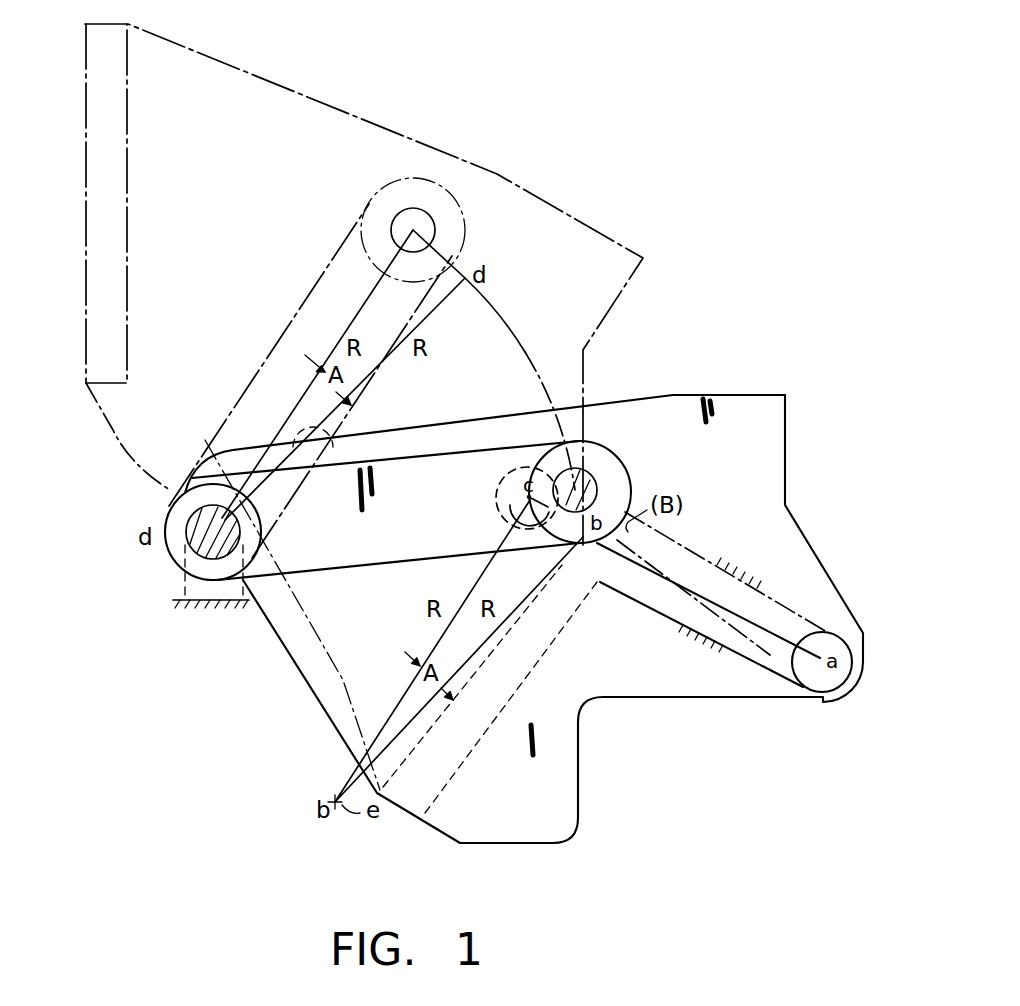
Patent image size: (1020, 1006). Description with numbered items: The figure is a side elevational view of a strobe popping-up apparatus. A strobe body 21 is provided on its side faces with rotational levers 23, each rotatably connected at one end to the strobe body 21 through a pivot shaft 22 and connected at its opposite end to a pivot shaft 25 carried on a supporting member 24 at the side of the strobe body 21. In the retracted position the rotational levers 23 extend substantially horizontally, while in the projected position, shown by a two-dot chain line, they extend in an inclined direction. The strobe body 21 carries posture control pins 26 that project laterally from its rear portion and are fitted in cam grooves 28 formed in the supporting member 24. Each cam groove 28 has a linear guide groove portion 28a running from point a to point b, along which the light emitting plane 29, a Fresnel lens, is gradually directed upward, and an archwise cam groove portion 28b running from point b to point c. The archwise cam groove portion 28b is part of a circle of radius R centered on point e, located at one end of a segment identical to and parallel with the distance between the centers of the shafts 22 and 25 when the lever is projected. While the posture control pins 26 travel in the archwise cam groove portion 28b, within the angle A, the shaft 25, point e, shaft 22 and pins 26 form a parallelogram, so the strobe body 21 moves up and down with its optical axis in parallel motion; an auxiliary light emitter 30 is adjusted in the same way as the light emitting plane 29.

The strobe body 21 is at (400, 140).
The pivot shaft 22 is at (453, 188).
The rotational lever 23 is at (305, 300).
The supporting member 24 is at (213, 608).
The pivot shaft 25 is at (187, 567).
The posture control pin 26 is at (817, 683).
The cam groove 28 is at (765, 598).
The linear guide groove portion 28a is at (745, 583).
The archwise cam groove portion 28b is at (508, 505).
The light emitting plane 29 is at (103, 272).
The auxiliary light emitter 30 is at (706, 650).